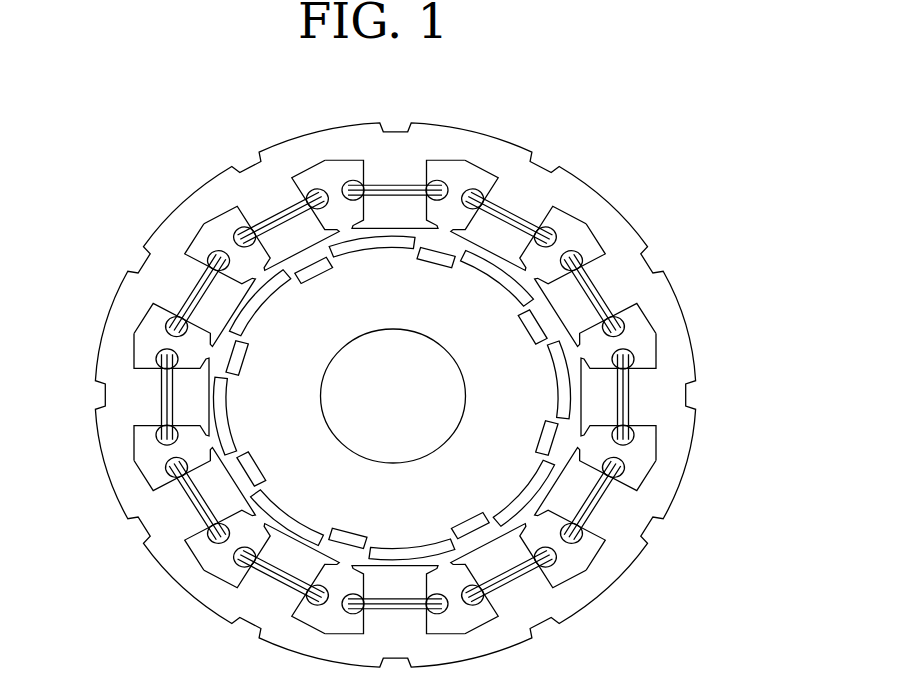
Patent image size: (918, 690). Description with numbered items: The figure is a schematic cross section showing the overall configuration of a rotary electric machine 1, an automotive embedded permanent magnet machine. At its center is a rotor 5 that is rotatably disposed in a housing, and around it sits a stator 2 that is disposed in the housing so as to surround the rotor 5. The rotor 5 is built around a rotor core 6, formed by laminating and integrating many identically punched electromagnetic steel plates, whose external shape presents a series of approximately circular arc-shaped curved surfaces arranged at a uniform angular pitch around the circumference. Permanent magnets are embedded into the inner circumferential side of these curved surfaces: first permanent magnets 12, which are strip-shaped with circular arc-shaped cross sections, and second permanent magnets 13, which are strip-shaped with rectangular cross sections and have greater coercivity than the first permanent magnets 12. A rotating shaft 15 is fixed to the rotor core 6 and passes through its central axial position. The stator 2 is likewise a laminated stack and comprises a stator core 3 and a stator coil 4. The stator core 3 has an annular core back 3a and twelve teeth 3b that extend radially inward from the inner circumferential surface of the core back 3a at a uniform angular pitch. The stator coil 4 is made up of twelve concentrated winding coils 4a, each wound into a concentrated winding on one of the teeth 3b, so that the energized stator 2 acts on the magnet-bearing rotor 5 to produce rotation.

The rotary electric machine 1 is at (125, 79).
The stator 2 is at (736, 208).
The stator core 3 is at (652, 238).
The core back 3a is at (677, 350).
The teeth 3b is at (607, 398).
The stator coil 4 is at (616, 296).
The concentrated winding coils 4a is at (608, 497).
The rotor 5 is at (255, 372).
The rotor core 6 is at (218, 349).
The first permanent magnets 12 is at (222, 398).
The second permanent magnets 13 is at (250, 478).
The rotating shaft 15 is at (437, 410).